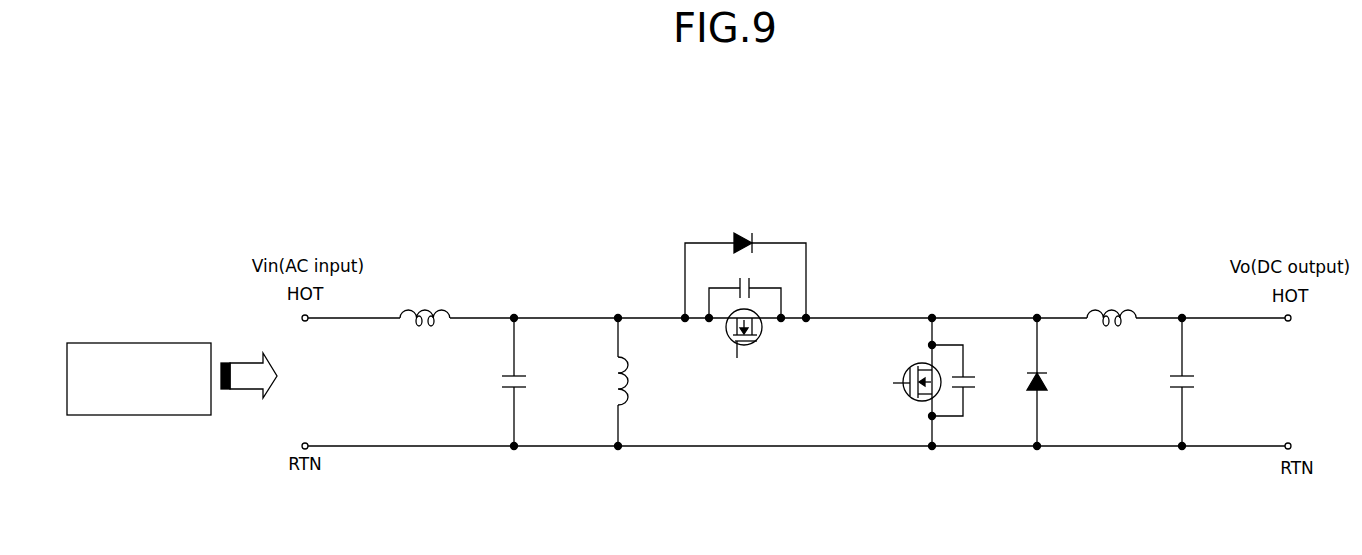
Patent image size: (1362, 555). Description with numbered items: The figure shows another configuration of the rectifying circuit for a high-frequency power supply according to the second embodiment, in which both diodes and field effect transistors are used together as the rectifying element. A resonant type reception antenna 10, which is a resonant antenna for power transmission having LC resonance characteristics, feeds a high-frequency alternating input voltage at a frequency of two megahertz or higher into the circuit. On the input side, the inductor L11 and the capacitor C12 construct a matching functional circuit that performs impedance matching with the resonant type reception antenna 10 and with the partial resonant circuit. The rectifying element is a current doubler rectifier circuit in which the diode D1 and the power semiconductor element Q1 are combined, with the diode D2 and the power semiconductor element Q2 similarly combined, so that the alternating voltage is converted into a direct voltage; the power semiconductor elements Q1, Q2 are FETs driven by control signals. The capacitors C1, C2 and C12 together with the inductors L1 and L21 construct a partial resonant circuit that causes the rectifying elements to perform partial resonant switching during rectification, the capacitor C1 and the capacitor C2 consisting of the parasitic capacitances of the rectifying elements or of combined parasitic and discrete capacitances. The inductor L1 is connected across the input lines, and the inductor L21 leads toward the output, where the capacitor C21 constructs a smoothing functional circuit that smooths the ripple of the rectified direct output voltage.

The resonant type reception antenna 10 is at (143, 343).
The inductor L11 is at (425, 305).
The capacitor C12 is at (534, 382).
The inductor L1 is at (637, 382).
The diode D1 is at (745, 265).
The capacitor C1 is at (745, 291).
The power semiconductor element Q1 is at (752, 346).
The power semiconductor element Q2 is at (851, 382).
The capacitor C2 is at (968, 380).
The diode D2 is at (1053, 382).
The inductor L21 is at (1111, 306).
The capacitor C21 is at (1202, 382).